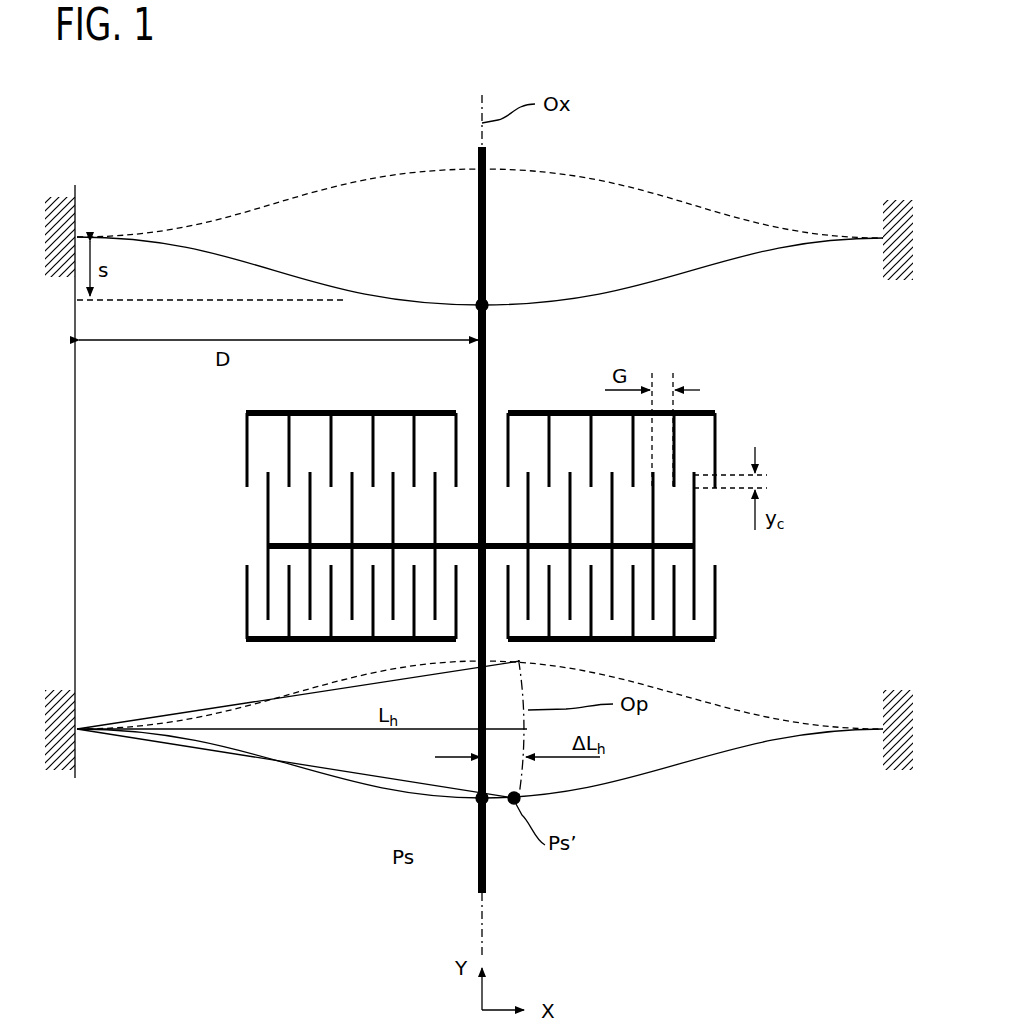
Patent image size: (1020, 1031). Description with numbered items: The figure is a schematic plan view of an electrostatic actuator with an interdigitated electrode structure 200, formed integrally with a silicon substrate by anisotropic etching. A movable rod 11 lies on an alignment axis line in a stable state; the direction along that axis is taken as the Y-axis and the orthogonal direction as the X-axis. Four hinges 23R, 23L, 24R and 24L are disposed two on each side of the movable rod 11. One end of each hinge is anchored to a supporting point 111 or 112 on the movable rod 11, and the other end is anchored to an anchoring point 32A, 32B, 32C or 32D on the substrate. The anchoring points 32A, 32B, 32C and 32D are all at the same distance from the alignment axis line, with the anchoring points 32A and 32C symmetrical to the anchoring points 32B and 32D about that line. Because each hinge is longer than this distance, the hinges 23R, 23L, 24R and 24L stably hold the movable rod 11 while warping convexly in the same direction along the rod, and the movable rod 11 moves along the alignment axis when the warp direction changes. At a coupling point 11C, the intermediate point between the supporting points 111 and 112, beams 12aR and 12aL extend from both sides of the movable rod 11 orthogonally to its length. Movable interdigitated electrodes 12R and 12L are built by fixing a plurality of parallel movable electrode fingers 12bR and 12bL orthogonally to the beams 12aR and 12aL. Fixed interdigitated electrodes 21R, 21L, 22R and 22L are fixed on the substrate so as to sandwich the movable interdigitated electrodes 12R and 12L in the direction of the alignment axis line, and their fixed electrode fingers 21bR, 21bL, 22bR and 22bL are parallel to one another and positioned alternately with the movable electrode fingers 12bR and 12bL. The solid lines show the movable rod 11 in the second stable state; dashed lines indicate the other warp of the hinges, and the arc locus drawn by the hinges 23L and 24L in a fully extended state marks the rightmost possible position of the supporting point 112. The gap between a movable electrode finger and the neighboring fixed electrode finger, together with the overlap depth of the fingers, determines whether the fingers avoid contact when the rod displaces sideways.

The electrostatic actuator with an interdigitated electrode structure 200 is at (698, 117).
The movable rod 11 is at (487, 390).
The coupling point 11C is at (478, 543).
The supporting point 111 is at (490, 303).
The supporting point 112 is at (478, 802).
The movable interdigitated electrode 12L is at (132, 495).
The beam 12aL is at (295, 546).
The movable electrode fingers 12bL is at (268, 504).
The movable interdigitated electrode 12R is at (852, 548).
The beam 12aR is at (673, 552).
The movable electrode fingers 12bR is at (653, 517).
The fixed interdigitated electrode 21L is at (221, 422).
The fixed electrode fingers 21bL is at (289, 460).
The fixed interdigitated electrode 21R is at (737, 419).
The fixed electrode fingers 21bR is at (676, 432).
The fixed interdigitated electrode 22L is at (225, 612).
The fixed electrode fingers 22bL is at (289, 598).
The fixed interdigitated electrode 22R is at (681, 659).
The fixed electrode fingers 22bR is at (674, 625).
The hinge 23L is at (288, 272).
The hinge 23R is at (698, 268).
The hinge 24L is at (302, 780).
The hinge 24R is at (670, 786).
The anchoring point 32A is at (80, 735).
The anchoring point 32B is at (883, 731).
The anchoring point 32C is at (80, 237).
The anchoring point 32D is at (883, 237).